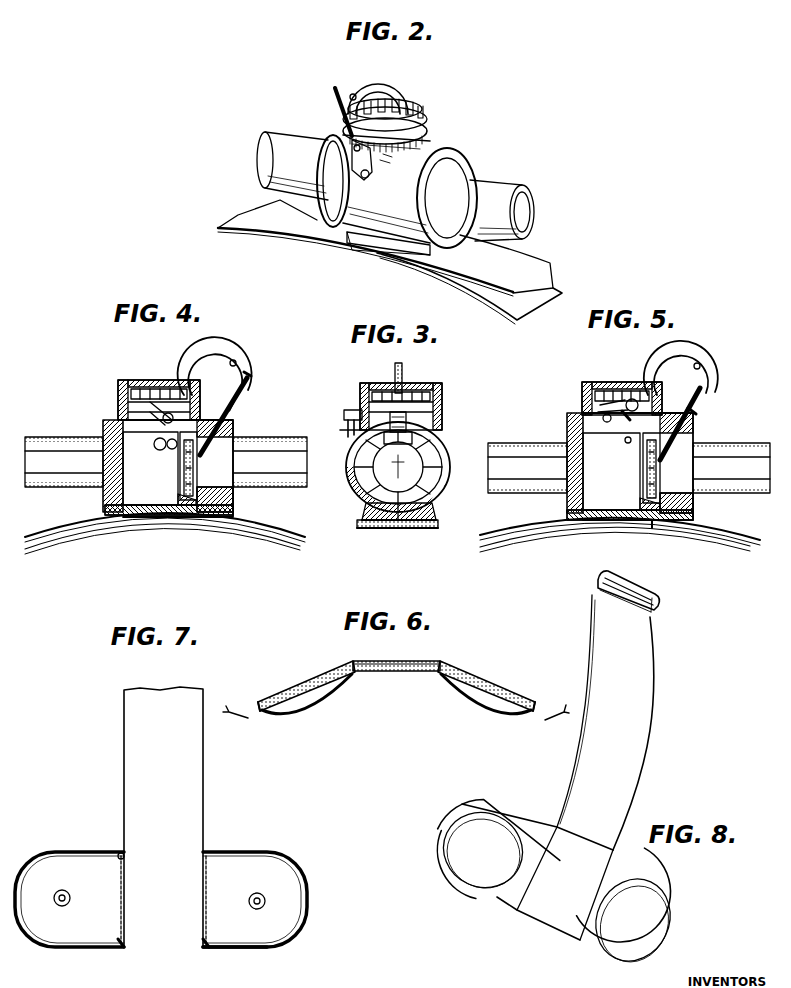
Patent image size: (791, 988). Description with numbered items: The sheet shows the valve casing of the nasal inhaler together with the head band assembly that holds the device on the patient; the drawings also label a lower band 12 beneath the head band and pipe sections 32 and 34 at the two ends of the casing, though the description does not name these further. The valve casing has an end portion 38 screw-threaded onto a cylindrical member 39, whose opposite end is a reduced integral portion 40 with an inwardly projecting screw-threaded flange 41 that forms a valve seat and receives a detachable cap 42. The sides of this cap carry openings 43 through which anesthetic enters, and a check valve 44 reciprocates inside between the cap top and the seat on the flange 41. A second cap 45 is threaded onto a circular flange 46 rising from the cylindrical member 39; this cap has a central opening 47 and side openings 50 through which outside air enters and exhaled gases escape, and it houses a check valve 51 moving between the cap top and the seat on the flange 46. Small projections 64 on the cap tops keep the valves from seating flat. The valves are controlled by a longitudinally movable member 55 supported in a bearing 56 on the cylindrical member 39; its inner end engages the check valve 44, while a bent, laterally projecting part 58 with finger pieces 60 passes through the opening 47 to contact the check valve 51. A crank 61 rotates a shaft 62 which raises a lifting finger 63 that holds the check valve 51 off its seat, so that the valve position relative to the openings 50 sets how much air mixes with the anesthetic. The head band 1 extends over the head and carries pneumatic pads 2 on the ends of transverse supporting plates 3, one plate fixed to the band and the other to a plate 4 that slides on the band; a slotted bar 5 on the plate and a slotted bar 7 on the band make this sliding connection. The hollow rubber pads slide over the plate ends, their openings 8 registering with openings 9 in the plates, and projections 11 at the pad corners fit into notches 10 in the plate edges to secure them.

In FIG. 2, the head band 1 is at (268, 224).
In FIG. 4, the head band 1 is at (265, 532).
In FIG. 3, the head band 1 is at (401, 530).
In FIG. 5, the head band 1 is at (705, 533).
In FIG. 6, the head band 1 is at (395, 673).
In FIG. 7, the head band 1 is at (196, 819).
In FIG. 6, the pneumatic pads 2 is at (285, 715).
In FIG. 7, the pneumatic pads 2 is at (75, 949).
In FIG. 8, the pneumatic pads 2 is at (455, 849).
In FIG. 6, the transverse supporting plates 3 is at (398, 662).
In FIG. 7, the transverse supporting plates 3 is at (291, 904).
In FIG. 8, the transverse supporting plates 3 is at (546, 918).
In FIG. 8, the plate 4 is at (641, 771).
In FIG. 8, the slotted bar 5 is at (600, 593).
In FIG. 6, the slotted bar 7 is at (396, 728).
In FIG. 6, the openings 8 is at (305, 688).
In FIG. 7, the openings 8 is at (63, 890).
In FIG. 6, the openings 9 is at (310, 710).
In FIG. 7, the openings 9 is at (70, 899).
In FIG. 7, the notches 10 is at (123, 868).
In FIG. 7, the projections 11 is at (122, 940).
In FIG. 2, the lower band 12 is at (516, 272).
In FIG. 4, the lower band 12 is at (46, 532).
In FIG. 3, the lower band 12 is at (375, 529).
In FIG. 5, the lower band 12 is at (506, 532).
In FIG. 2, the inlet pipe section 32 is at (505, 200).
In FIG. 4, the inlet pipe section 32 is at (48, 440).
In FIG. 5, the inlet pipe section 32 is at (522, 444).
In FIG. 2, the outlet pipe section 34 is at (272, 160).
In FIG. 4, the outlet pipe section 34 is at (285, 493).
In FIG. 3, the outlet pipe section 34 is at (352, 497).
In FIG. 5, the outlet pipe section 34 is at (740, 444).
In FIG. 2, the end portion 38 is at (463, 171).
In FIG. 4, the end portion 38 is at (108, 418).
In FIG. 5, the end portion 38 is at (572, 419).
In FIG. 2, the cylindrical member 39 is at (362, 246).
In FIG. 4, the cylindrical member 39 is at (135, 517).
In FIG. 3, the cylindrical member 39 is at (432, 493).
In FIG. 5, the cylindrical member 39 is at (615, 522).
In FIG. 2, the reduced integral portion 40 is at (327, 218).
In FIG. 4, the reduced integral portion 40 is at (217, 512).
In FIG. 5, the reduced integral portion 40 is at (700, 513).
In FIG. 4, the screw-threaded flange 41 is at (196, 481).
In FIG. 5, the screw-threaded flange 41 is at (660, 483).
In FIG. 4, the cap 42 is at (180, 497).
In FIG. 3, the cap 42 is at (398, 532).
In FIG. 5, the cap 42 is at (644, 500).
In FIG. 4, the openings 43 is at (200, 465).
In FIG. 3, the openings 43 is at (441, 441).
In FIG. 5, the openings 43 is at (646, 471).
In FIG. 4, the check valve 44 is at (195, 522).
In FIG. 3, the check valve 44 is at (436, 523).
In FIG. 5, the check valve 44 is at (686, 468).
In FIG. 2, the cap 45 is at (420, 111).
In FIG. 4, the cap 45 is at (120, 383).
In FIG. 3, the cap 45 is at (445, 392).
In FIG. 5, the cap 45 is at (596, 386).
In FIG. 4, the circular flange 46 is at (236, 405).
In FIG. 5, the circular flange 46 is at (582, 395).
In FIG. 2, the central opening 47 is at (406, 106).
In FIG. 3, the central opening 47 is at (393, 386).
In FIG. 2, the openings 50 is at (428, 126).
In FIG. 4, the openings 50 is at (170, 386).
In FIG. 4, the check valve 51 is at (126, 380).
In FIG. 3, the check valve 51 is at (440, 386).
In FIG. 5, the check valve 51 is at (600, 382).
In FIG. 4, the longitudinally movable member 55 is at (252, 385).
In FIG. 3, the longitudinally movable member 55 is at (352, 458).
In FIG. 5, the longitudinally movable member 55 is at (692, 413).
In FIG. 2, the bearing 56 is at (342, 110).
In FIG. 4, the bearing 56 is at (249, 388).
In FIG. 5, the bearing 56 is at (706, 392).
In FIG. 2, the bent laterally projecting part 58 is at (373, 90).
In FIG. 4, the bent laterally projecting part 58 is at (218, 357).
In FIG. 3, the bent laterally projecting part 58 is at (404, 374).
In FIG. 5, the bent laterally projecting part 58 is at (684, 360).
In FIG. 2, the finger pieces 60 is at (348, 96).
In FIG. 4, the finger pieces 60 is at (238, 364).
In FIG. 5, the finger pieces 60 is at (702, 366).
In FIG. 2, the crank 61 is at (370, 170).
In FIG. 3, the crank 61 is at (345, 428).
In FIG. 3, the shaft 62 is at (360, 410).
In FIG. 4, the lifting finger 63 is at (152, 432).
In FIG. 3, the lifting finger 63 is at (445, 419).
In FIG. 5, the lifting finger 63 is at (630, 398).
In FIG. 5, the small projections 64 is at (660, 532).